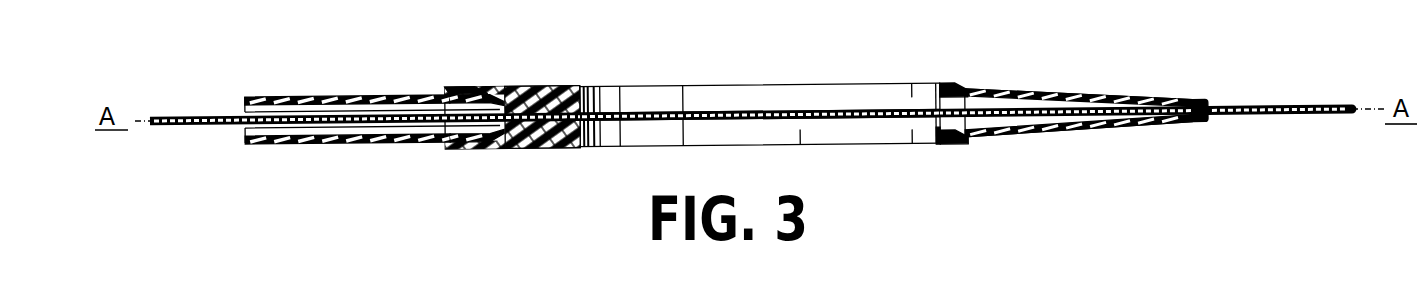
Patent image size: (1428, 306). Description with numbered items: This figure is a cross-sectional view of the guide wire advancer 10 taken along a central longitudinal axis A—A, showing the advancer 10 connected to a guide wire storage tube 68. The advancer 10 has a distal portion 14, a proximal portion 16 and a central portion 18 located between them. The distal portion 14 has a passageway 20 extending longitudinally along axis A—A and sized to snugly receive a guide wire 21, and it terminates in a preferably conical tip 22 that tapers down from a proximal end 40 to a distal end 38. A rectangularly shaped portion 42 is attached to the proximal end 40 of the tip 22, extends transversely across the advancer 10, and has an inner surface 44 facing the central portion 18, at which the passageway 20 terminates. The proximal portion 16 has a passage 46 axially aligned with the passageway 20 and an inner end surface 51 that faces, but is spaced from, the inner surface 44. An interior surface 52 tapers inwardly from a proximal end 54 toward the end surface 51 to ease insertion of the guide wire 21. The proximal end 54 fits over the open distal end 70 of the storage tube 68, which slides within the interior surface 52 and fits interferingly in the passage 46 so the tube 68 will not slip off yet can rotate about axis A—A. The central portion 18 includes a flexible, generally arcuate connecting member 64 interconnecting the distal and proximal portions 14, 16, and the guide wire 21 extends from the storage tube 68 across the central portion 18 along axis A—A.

The guide wire advancer 10 is at (652, 60).
The distal portion 14 is at (1078, 100).
The proximal portion 16 is at (476, 90).
The central portion 18 is at (670, 88).
The passageway 20 is at (1055, 100).
The guide wire 21 is at (795, 108).
The tip 22 is at (1192, 98).
The distal end 38 is at (1194, 122).
The proximal end 40 is at (957, 86).
The rectangularly shaped portion 42 is at (962, 137).
The inner surface 44 is at (938, 133).
The passage 46 is at (507, 128).
The inner end surface 51 is at (590, 137).
The interior surface 52 is at (518, 90).
The proximal end 54 is at (448, 92).
The second connecting member 64 is at (798, 114).
The guide wire storage tube 68 is at (278, 143).
The open distal end 70 is at (495, 138).